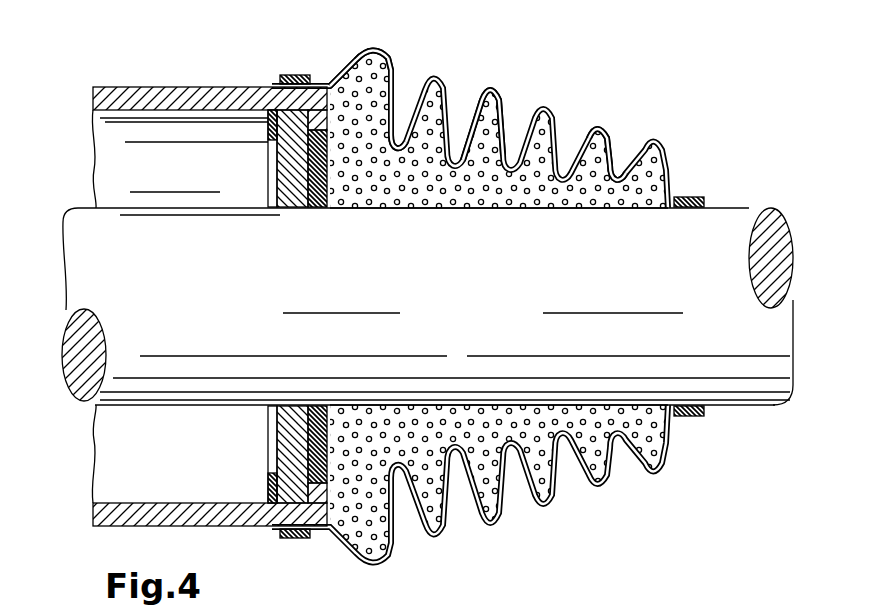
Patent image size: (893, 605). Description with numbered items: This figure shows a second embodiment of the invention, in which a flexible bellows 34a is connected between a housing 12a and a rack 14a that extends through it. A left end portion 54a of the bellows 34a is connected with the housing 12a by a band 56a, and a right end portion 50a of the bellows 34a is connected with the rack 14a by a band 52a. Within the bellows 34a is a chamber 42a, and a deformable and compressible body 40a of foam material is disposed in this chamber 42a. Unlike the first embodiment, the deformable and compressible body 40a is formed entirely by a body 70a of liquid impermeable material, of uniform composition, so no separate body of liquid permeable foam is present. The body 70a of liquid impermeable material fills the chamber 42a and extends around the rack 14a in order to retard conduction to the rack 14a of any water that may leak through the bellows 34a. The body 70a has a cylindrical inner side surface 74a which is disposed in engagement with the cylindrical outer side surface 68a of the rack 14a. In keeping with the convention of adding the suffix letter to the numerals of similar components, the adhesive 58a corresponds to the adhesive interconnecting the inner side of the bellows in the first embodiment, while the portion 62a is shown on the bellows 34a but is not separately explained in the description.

The housing 12a is at (138, 82).
The rack 14a is at (95, 258).
The flexible bellows 34a is at (552, 95).
The deformable and compressible body 40a is at (608, 152).
The chamber 42a is at (490, 97).
The right end portion 50a is at (680, 210).
The band 52a is at (690, 418).
The left end portion 54a is at (278, 85).
The band 56a is at (303, 537).
The boot end portion 58a is at (352, 66).
The boot convolution 62a is at (393, 74).
The cylindrical outer side surface 68a is at (727, 322).
The body of liquid impermeable material 70a is at (484, 193).
The cylindrical inner side surface 74a is at (618, 210).